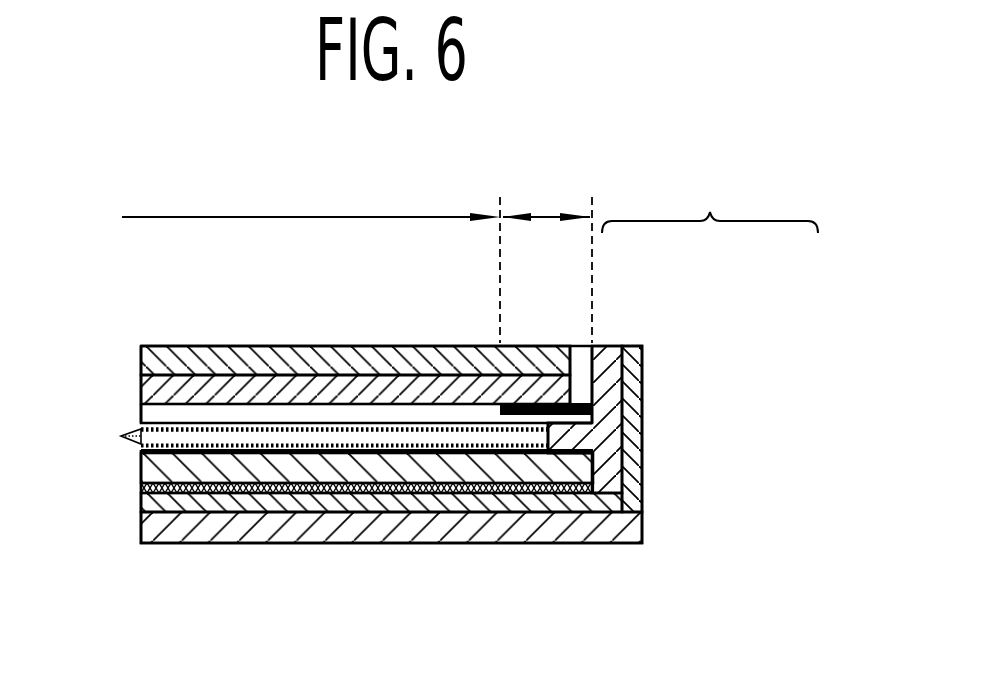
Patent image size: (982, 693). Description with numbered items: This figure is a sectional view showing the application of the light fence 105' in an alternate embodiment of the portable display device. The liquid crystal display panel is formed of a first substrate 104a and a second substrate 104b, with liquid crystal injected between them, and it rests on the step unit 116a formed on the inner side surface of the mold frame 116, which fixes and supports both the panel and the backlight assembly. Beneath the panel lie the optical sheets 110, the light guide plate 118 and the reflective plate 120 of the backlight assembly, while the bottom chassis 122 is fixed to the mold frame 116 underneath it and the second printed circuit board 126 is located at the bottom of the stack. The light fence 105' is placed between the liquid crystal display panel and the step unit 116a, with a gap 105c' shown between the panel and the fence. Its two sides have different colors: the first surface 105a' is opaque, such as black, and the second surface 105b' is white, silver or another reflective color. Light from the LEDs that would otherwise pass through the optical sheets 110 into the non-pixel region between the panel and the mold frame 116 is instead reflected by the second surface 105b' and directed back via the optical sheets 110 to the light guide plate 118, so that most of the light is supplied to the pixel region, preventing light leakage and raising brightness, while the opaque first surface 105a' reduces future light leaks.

The light fence 105' is at (710, 193).
The first substrate 104a is at (237, 350).
The second substrate 104b is at (317, 376).
The air gap 105c' is at (366, 330).
The first surface 105a' is at (593, 322).
The second surface 105b' is at (686, 326).
The optical sheets 110 is at (112, 423).
The mold frame 116 is at (605, 398).
The step unit 116a is at (580, 437).
The light guide plate 118 is at (428, 473).
The reflective plate 120 is at (330, 494).
The bottom chassis 122 is at (633, 480).
The second printed circuit board 126 is at (640, 525).